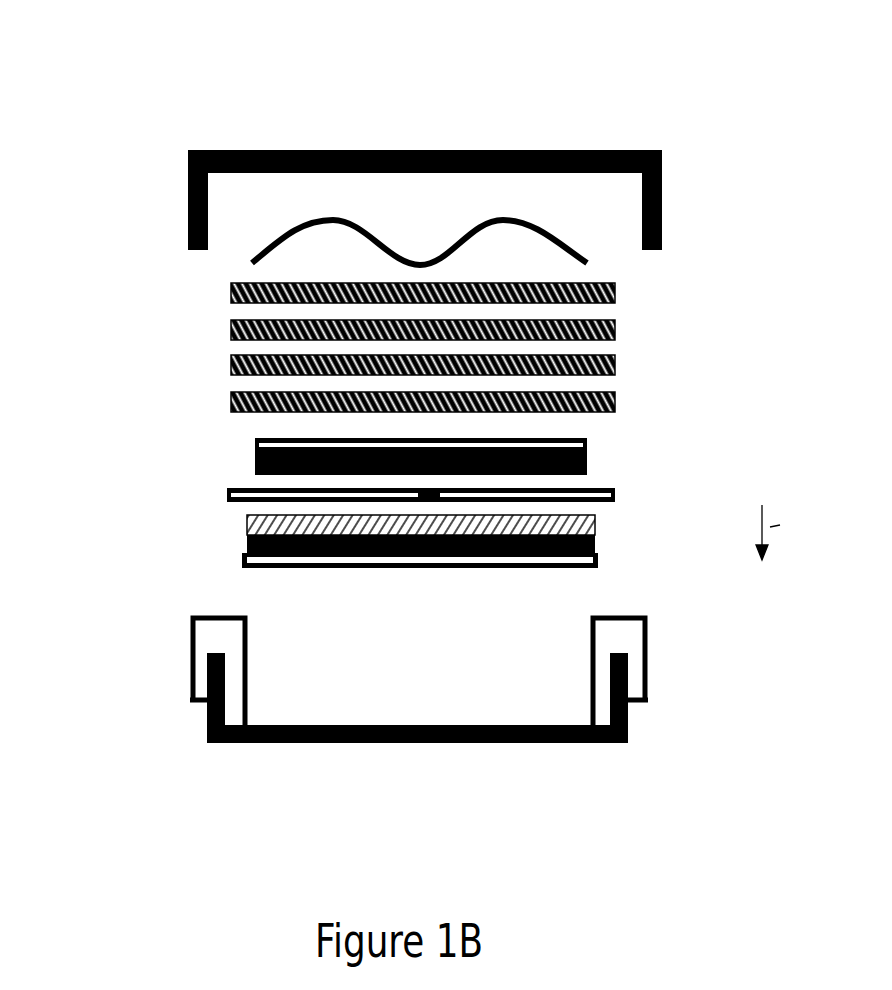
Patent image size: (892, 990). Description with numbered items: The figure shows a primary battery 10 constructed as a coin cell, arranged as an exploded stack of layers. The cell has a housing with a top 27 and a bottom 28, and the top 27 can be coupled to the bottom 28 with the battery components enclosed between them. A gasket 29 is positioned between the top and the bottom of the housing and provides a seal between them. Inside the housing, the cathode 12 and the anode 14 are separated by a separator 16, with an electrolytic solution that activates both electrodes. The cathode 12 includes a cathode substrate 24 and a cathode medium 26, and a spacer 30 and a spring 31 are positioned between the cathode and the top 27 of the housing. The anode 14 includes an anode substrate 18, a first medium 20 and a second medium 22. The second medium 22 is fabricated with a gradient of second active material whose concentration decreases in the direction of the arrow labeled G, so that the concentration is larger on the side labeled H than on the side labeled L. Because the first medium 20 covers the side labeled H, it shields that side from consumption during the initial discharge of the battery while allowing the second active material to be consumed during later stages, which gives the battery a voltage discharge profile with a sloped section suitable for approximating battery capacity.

The primary battery 10 is at (613, 125).
The top of housing 27 is at (218, 152).
The spring 31 is at (590, 263).
The spacer 30 is at (232, 287).
The cathode 12 is at (605, 459).
The cathode medium 26 is at (255, 466).
The cathode substrate 24 is at (588, 443).
The separator 16 is at (228, 495).
The anode 14 is at (370, 594).
The first medium 20 is at (595, 518).
The second medium 22 is at (247, 543).
The anode substrate 18 is at (598, 562).
The high-concentration side of second medium H is at (248, 514).
The low-concentration side of second medium L is at (308, 553).
The gradient direction arrow G is at (788, 532).
The gasket 29 is at (190, 660).
The bottom of housing 28 is at (316, 745).